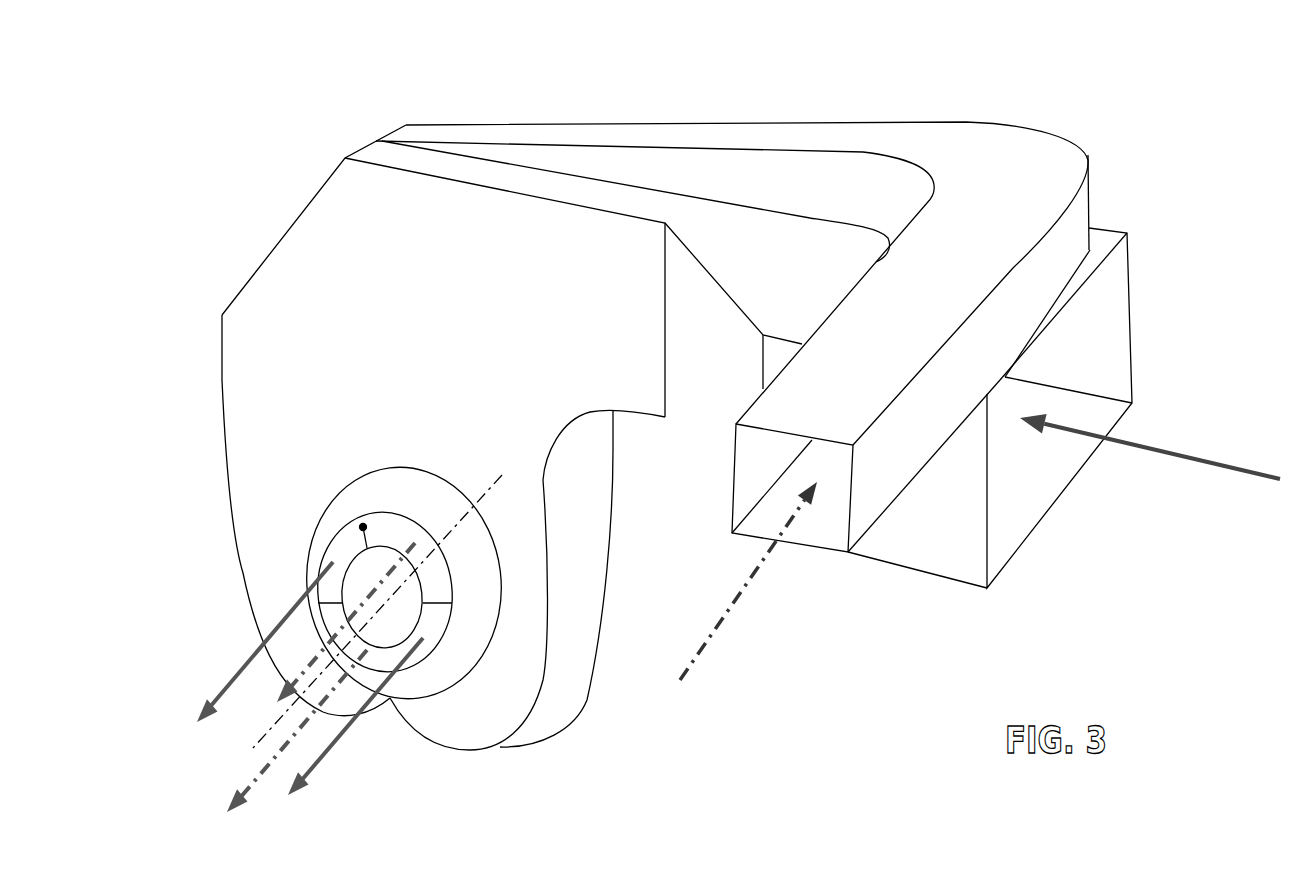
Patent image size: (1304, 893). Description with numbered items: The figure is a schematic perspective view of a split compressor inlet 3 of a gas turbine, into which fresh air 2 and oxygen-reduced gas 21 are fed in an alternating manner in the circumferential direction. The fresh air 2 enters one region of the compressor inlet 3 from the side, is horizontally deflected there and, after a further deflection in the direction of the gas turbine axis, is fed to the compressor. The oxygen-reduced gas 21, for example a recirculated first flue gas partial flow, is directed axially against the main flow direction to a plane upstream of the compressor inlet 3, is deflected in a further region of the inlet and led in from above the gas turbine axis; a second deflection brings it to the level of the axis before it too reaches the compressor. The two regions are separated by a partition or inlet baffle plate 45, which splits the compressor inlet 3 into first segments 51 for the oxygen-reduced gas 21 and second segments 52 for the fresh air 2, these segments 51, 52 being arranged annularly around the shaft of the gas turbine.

The compressor inlet 3 is at (457, 318).
The inlet baffle plate 45 is at (363, 527).
The first segments 51 is at (402, 547).
The second segments 52 is at (340, 552).
The fresh air 2 is at (735, 604).
The oxygen-reduced gas 21 is at (510, 668).